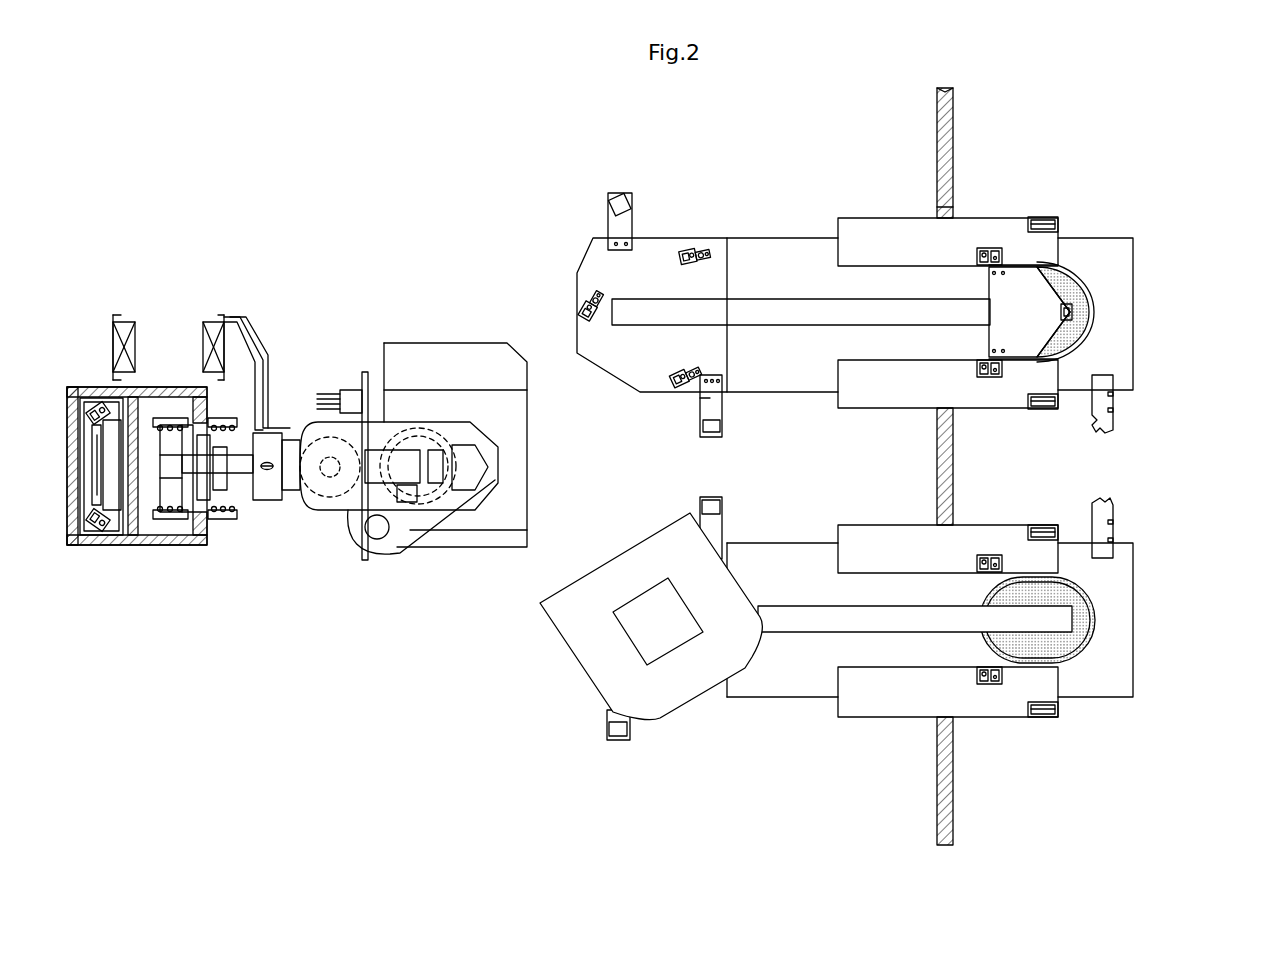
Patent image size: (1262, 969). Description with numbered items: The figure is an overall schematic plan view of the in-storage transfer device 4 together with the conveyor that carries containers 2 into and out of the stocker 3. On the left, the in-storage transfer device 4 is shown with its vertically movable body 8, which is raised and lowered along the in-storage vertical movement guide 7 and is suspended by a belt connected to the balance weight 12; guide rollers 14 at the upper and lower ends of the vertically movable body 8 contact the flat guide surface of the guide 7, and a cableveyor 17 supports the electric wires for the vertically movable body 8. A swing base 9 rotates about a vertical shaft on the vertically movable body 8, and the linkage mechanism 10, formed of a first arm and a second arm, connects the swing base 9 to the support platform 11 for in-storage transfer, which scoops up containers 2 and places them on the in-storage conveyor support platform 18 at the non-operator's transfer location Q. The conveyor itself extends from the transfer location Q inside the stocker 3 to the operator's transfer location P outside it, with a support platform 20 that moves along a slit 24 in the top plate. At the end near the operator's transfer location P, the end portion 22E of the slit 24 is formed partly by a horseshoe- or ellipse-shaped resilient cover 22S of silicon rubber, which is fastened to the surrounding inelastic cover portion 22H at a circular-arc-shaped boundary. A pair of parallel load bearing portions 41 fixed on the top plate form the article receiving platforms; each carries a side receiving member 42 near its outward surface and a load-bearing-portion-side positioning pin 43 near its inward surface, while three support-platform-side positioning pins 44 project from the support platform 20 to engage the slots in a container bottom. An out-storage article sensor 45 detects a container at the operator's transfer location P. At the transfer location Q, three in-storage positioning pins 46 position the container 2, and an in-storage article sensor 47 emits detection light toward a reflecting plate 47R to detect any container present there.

The container 2 is at (630, 560).
The stocker 3 is at (774, 136).
The in-storage transfer device 4 is at (318, 272).
The in-storage vertical movement guide 7 is at (196, 545).
The vertically movable body 8 is at (275, 500).
The swing base 9 is at (420, 422).
The linkage mechanism 10 is at (395, 540).
The support platform for in-storage transfer 11 is at (452, 500).
The balance weight 12 is at (98, 535).
The guide rollers 14 is at (166, 418).
The cableveyor 17 is at (128, 322).
The in-storage conveyor support platform 18 is at (627, 282).
The support platform 20 is at (990, 290).
The inelastic cover portion 22H is at (1100, 288).
The resilient cover 22S is at (1080, 312).
The end portion 22E is at (1105, 338).
The slit 24 is at (760, 318).
The load bearing portions 41 is at (865, 218).
The side receiving member 42 is at (1045, 220).
The load-bearing-portion-side positioning pin 43 is at (977, 256).
The support-platform-side positioning pins 44 is at (1012, 265).
The out-storage article sensor 45 is at (1112, 432).
The in-storage positioning pins 46 is at (690, 255).
The in-storage article sensor 47 is at (608, 197).
The reflecting plate 47R is at (700, 437).
The operator's transfer location P is at (1130, 192).
The transfer location for a non-operator Q is at (663, 185).